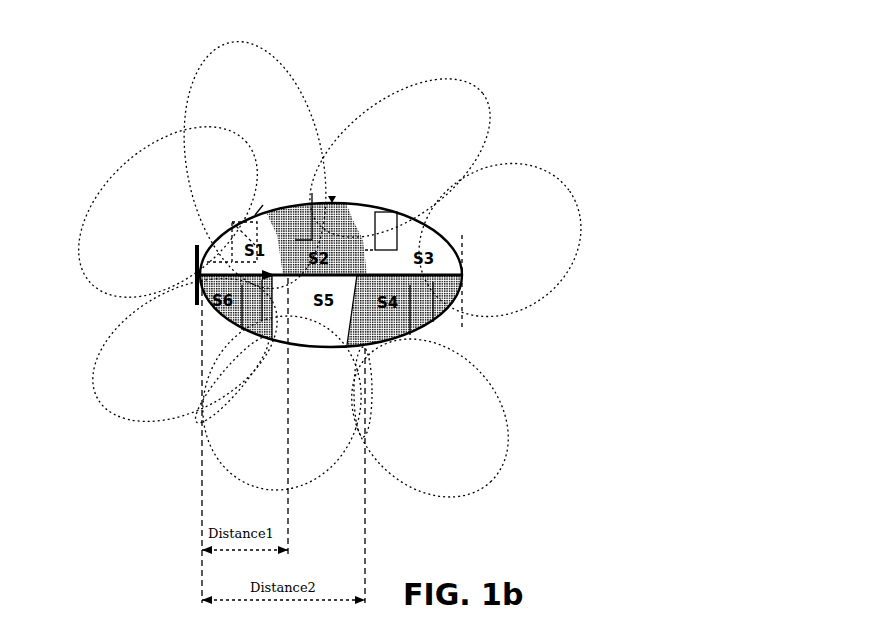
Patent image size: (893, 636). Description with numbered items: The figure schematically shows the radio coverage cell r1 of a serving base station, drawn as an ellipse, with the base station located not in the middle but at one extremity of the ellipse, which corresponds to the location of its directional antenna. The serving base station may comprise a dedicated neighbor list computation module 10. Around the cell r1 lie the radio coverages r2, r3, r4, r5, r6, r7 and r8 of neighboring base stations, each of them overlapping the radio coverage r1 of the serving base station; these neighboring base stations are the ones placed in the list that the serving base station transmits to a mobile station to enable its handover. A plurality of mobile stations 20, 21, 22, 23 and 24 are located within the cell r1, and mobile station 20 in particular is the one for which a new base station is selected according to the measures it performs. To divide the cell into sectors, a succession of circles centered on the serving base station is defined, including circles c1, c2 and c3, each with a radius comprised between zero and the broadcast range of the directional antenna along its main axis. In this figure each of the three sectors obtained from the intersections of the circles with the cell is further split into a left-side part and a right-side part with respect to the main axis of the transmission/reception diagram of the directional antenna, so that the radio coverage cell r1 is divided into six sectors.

The radio coverage cell r1 is at (444, 392).
The radio coverage of neighboring base station r2 is at (263, 164).
The radio coverage of neighboring base station r3 is at (418, 158).
The radio coverage of neighboring base station r4 is at (518, 239).
The radio coverage of neighboring base station r5 is at (449, 417).
The radio coverage of neighboring base station r6 is at (265, 403).
The radio coverage of neighboring base station r7 is at (165, 350).
The radio coverage of neighboring base station r8 is at (167, 211).
The circle c1 is at (190, 199).
The circle c2 is at (371, 178).
The circle c3 is at (499, 267).
The neighbor list computation module 10 is at (156, 261).
The mobile station 20 is at (416, 213).
The mobile station 21 is at (428, 320).
The mobile station 22 is at (216, 315).
The mobile station 23 is at (202, 231).
The mobile station 24 is at (331, 257).